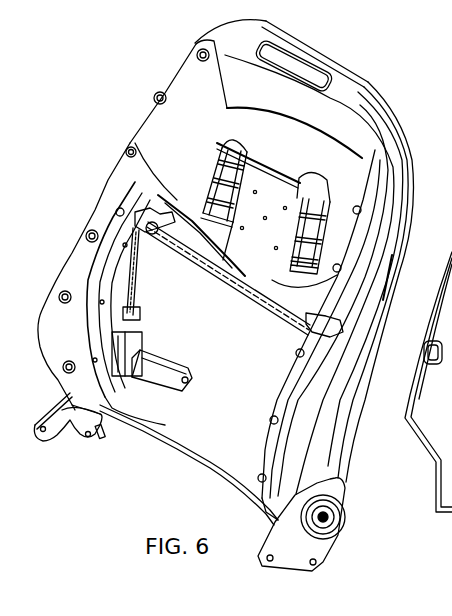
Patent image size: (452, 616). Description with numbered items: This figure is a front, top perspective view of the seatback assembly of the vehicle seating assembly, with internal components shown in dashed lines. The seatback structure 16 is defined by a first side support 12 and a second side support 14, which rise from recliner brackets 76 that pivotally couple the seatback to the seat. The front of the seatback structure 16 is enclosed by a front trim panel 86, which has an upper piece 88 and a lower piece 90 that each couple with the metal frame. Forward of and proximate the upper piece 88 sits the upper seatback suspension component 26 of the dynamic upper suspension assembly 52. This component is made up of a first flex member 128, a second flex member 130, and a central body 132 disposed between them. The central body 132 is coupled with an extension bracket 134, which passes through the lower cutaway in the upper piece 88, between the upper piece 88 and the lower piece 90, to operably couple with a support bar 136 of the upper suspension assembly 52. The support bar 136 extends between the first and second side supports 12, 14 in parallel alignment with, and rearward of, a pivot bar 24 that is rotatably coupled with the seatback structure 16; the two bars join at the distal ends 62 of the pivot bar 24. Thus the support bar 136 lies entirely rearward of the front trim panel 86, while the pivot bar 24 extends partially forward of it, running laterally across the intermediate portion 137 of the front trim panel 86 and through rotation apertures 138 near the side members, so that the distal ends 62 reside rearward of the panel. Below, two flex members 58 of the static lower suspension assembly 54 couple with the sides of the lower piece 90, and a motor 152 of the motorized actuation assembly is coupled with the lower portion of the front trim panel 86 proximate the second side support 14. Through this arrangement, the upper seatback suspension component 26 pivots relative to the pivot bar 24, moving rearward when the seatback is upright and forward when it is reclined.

The first side support 12 is at (336, 408).
The second side support 14 is at (112, 190).
The seatback structure 16 is at (256, 30).
The pivot bar 24 is at (233, 278).
The upper seatback suspension component 26 is at (148, 127).
The dynamic upper suspension assembly 52 is at (362, 168).
The static lower suspension assembly 54 is at (72, 262).
The flex members 58 is at (60, 335).
The distal ends 62 is at (108, 232).
The recliner brackets 76 is at (70, 425).
The front trim panel 86 is at (261, 290).
The upper piece 88 is at (372, 86).
The lower piece 90 is at (193, 418).
The first flex member 128 is at (343, 233).
The second flex member 130 is at (178, 88).
The central body 132 is at (329, 130).
The extension bracket 134 is at (266, 200).
The support bar 136 is at (280, 312).
The intermediate portion 137 is at (230, 310).
The rotation apertures 138 is at (163, 243).
The motor 152 is at (134, 380).